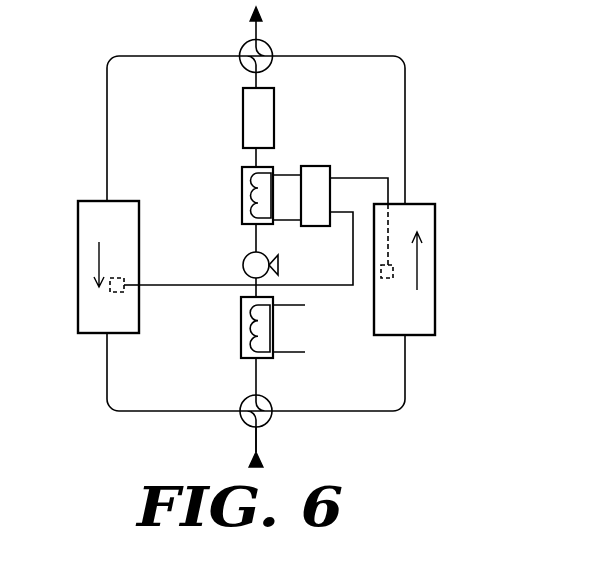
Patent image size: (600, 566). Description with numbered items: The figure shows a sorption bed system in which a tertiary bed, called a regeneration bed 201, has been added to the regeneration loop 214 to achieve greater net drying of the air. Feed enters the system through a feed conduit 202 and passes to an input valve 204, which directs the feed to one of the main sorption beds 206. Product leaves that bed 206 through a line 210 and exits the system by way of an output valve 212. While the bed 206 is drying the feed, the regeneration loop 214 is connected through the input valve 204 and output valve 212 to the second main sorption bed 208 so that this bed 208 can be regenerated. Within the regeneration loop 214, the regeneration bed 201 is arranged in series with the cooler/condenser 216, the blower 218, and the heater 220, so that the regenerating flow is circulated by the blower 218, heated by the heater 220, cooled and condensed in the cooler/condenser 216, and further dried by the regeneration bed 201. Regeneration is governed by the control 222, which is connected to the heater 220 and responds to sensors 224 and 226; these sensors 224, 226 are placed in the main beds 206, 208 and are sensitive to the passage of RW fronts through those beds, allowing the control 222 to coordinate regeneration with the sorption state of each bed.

The regeneration bed 201 is at (274, 107).
The feed conduit 202 is at (257, 436).
The input valve 204 is at (266, 401).
The main sorption bed 206 is at (436, 210).
The second main sorption bed 208 is at (78, 232).
The line 210 is at (406, 92).
The output valve 212 is at (268, 44).
The regeneration loop 214 is at (279, 179).
The cooler/condenser 216 is at (280, 331).
The blower 218 is at (279, 265).
The heater 220 is at (242, 193).
The control 222 is at (329, 170).
The sensor 224 is at (380, 281).
The sensor 226 is at (125, 277).